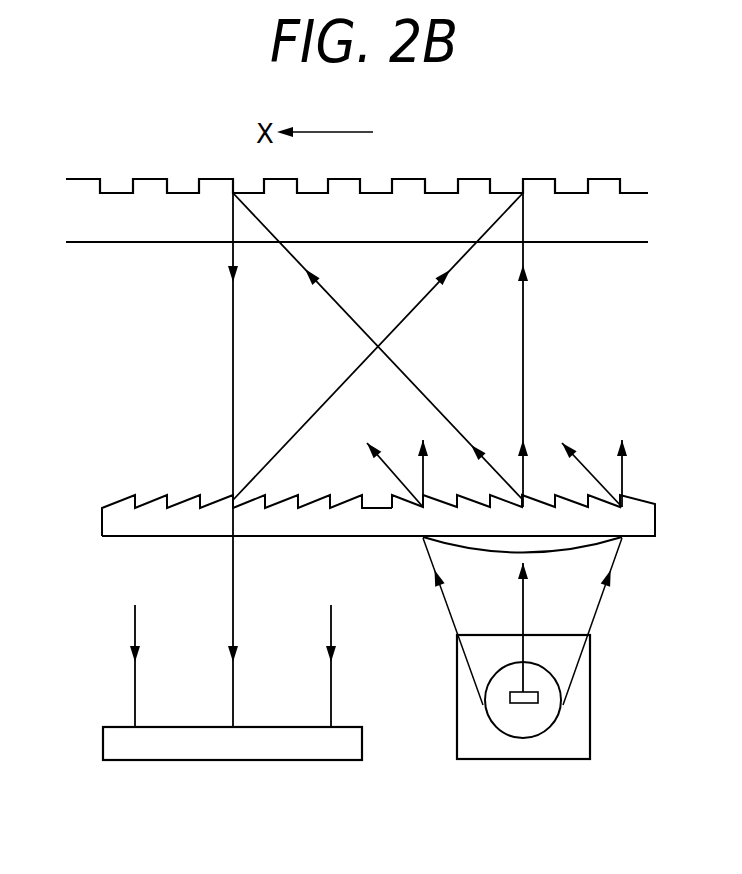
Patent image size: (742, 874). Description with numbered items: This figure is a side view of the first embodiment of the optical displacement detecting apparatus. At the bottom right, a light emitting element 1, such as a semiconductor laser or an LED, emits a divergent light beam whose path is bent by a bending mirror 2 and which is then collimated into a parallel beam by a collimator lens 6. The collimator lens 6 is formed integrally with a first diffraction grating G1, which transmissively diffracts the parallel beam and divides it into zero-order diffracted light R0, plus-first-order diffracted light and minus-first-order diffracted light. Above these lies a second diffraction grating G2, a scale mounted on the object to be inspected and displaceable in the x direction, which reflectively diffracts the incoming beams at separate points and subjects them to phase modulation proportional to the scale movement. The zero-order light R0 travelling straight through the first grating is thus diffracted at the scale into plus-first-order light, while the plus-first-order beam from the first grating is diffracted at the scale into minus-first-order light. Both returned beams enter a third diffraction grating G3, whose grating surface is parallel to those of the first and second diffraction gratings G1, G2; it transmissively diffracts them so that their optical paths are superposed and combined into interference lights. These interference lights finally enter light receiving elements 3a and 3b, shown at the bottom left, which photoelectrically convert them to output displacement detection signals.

The first diffraction grating G1 is at (540, 497).
The second diffraction grating G2 is at (610, 178).
The third diffraction grating G3 is at (153, 495).
The light emitting element 1 is at (513, 704).
The bending mirror 2 is at (544, 679).
The collimator lens 6 is at (600, 540).
The light receiving element 3a is at (240, 690).
The light receiving element 3b is at (240, 690).
The 0-order diffracted light R0 is at (523, 347).